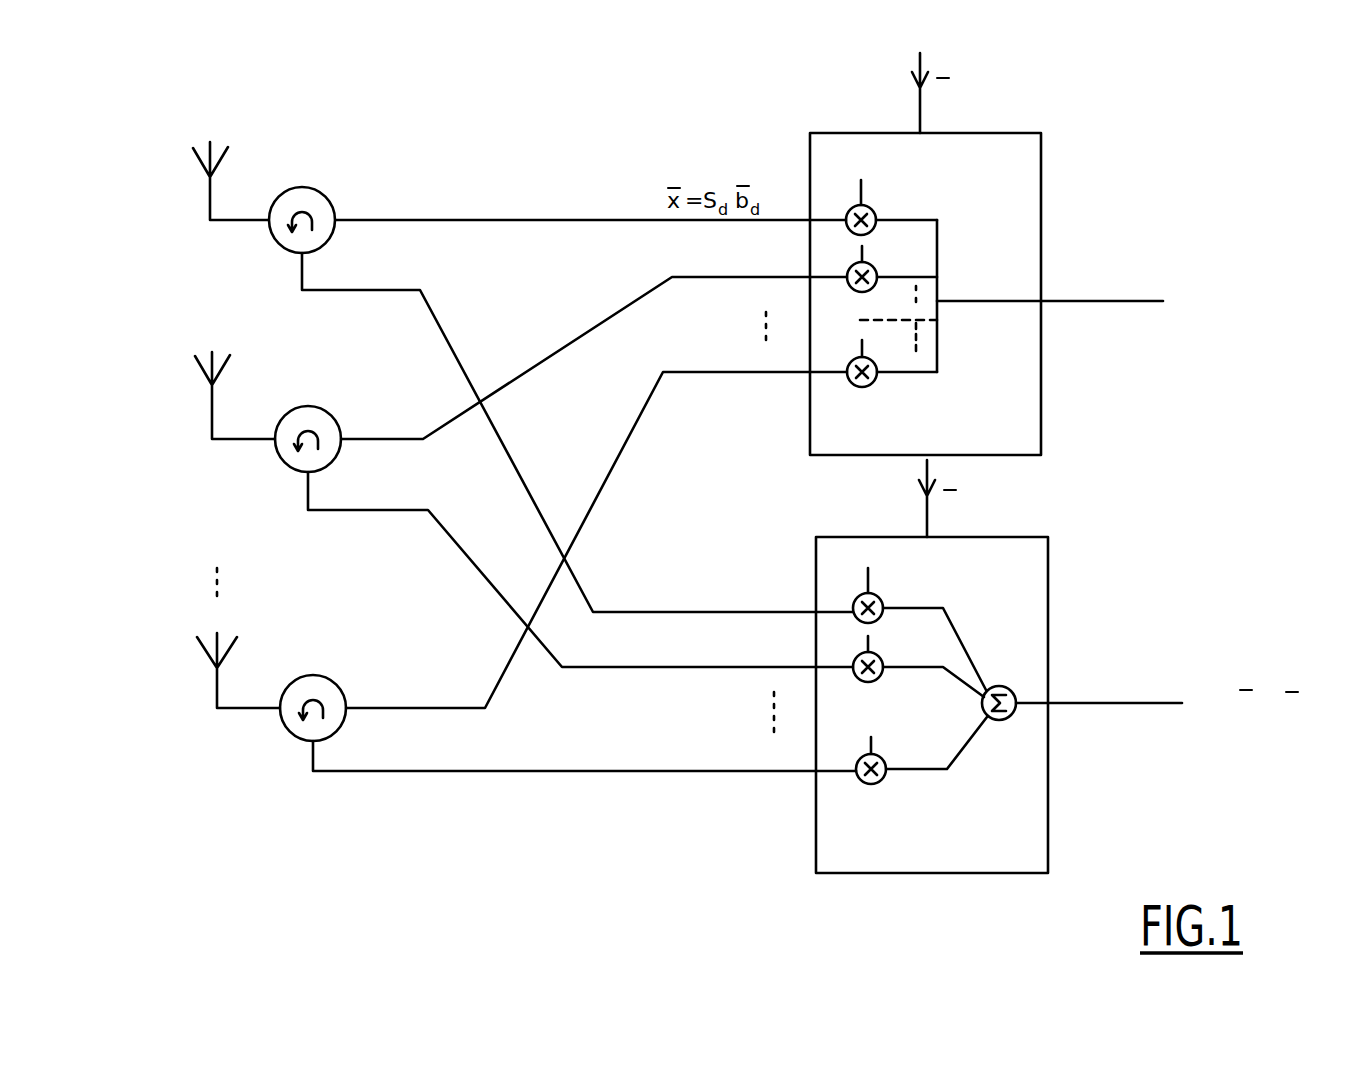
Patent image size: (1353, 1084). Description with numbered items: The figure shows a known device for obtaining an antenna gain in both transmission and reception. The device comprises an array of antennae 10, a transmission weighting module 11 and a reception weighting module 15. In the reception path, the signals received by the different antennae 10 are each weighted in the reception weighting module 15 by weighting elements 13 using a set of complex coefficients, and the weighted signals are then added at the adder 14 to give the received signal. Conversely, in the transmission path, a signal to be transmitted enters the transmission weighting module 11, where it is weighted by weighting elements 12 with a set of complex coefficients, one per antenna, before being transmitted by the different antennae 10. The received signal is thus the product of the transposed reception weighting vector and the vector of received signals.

The array of antennae 10 is at (165, 740).
The transmission weighting module 11 is at (1041, 172).
The transmission weighting elements 12 is at (850, 362).
The reception weighting elements 13 is at (860, 758).
The adder 14 is at (1000, 686).
The reception weighting module 15 is at (1048, 538).